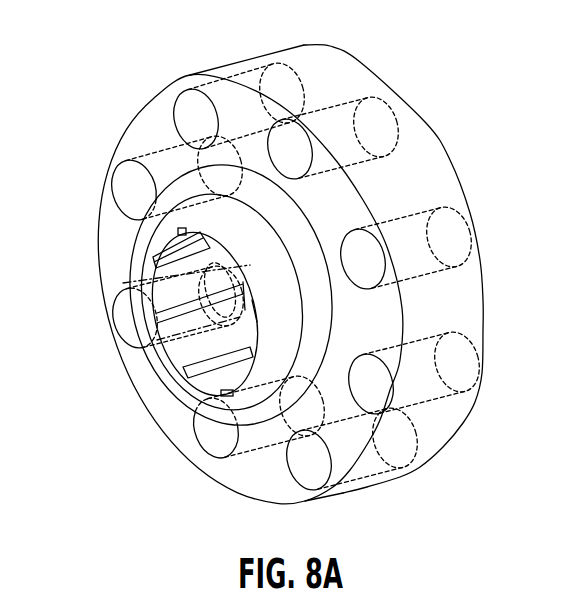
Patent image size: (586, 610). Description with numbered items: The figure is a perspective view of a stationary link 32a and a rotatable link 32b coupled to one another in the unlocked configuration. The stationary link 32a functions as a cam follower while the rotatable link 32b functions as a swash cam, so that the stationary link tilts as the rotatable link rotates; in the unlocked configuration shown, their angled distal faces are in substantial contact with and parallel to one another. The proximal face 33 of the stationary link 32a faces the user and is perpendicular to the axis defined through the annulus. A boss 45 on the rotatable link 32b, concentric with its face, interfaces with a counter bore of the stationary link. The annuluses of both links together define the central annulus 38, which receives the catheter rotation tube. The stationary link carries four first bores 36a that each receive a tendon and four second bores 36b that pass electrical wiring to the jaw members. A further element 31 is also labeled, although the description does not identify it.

The flange plate 31 is at (522, 133).
The stationary link 32a is at (311, 65).
The rotatable link 32b is at (300, 352).
The proximal face 33 is at (128, 148).
The first plurality of bores 36a is at (115, 188).
The second plurality of bores 36b is at (173, 113).
The central annulus 38 is at (178, 355).
The boss 45 is at (342, 320).